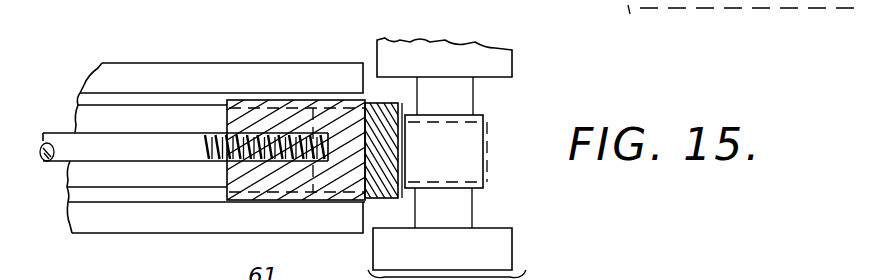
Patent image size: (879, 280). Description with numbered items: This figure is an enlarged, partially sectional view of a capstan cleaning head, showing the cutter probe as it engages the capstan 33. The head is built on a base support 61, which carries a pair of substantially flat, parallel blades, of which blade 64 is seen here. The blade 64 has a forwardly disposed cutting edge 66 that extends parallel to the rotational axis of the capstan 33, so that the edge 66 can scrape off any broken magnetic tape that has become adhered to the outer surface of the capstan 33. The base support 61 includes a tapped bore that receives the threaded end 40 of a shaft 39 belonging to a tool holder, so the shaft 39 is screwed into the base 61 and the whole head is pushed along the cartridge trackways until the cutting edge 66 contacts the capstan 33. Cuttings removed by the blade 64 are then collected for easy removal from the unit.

The capstan 33 is at (470, 137).
The shaft 39 is at (100, 162).
The threaded end 40 is at (211, 163).
The base support 61 is at (245, 197).
The blade 64 is at (386, 101).
The cutting edge 66 is at (400, 199).